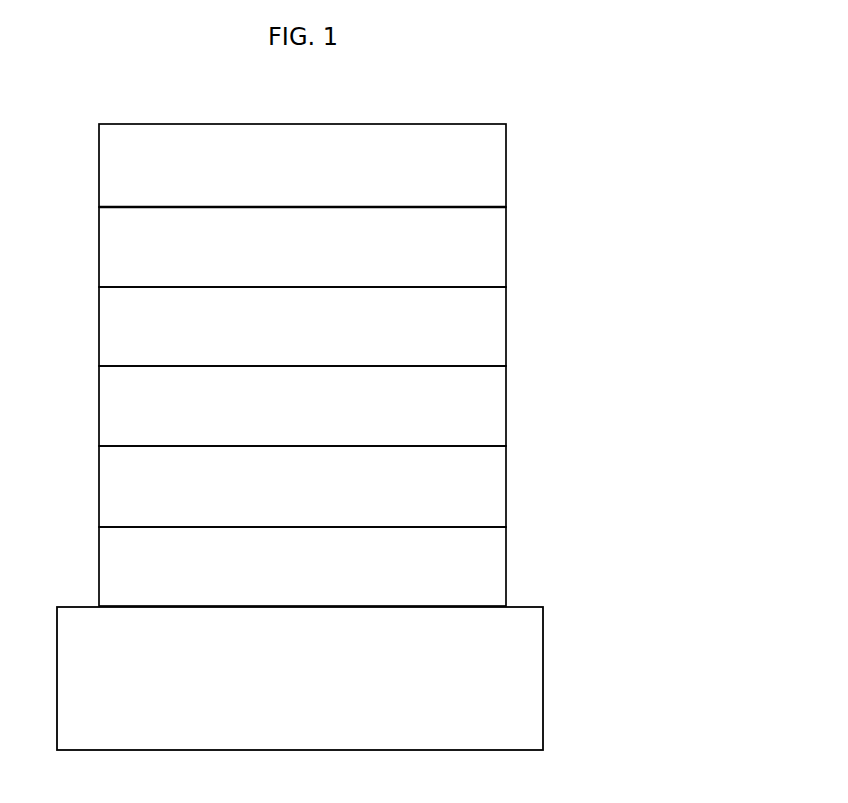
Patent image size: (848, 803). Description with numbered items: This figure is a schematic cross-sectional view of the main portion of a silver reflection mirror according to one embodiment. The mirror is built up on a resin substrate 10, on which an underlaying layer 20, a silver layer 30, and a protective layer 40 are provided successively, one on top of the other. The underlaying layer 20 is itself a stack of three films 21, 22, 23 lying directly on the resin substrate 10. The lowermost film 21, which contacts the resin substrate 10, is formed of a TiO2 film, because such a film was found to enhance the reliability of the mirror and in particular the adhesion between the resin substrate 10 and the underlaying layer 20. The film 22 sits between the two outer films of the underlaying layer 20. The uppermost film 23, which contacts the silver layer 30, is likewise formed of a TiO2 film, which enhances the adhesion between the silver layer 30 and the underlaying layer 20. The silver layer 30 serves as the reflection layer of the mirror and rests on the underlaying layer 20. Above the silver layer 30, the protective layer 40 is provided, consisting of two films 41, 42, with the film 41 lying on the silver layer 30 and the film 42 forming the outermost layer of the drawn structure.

The resin substrate 10 is at (528, 678).
The underlaying layer 20 is at (421, 486).
The film of the underlaying layer contacting the resin substrate 21 is at (332, 566).
The film of the underlaying layer 22 is at (480, 492).
The film of the underlaying layer contacting the silver layer 23 is at (480, 407).
The silver layer 30 is at (490, 332).
The protective layer 40 is at (419, 205).
The film of the protective layer 41 is at (480, 245).
The film of the protective layer 42 is at (480, 170).